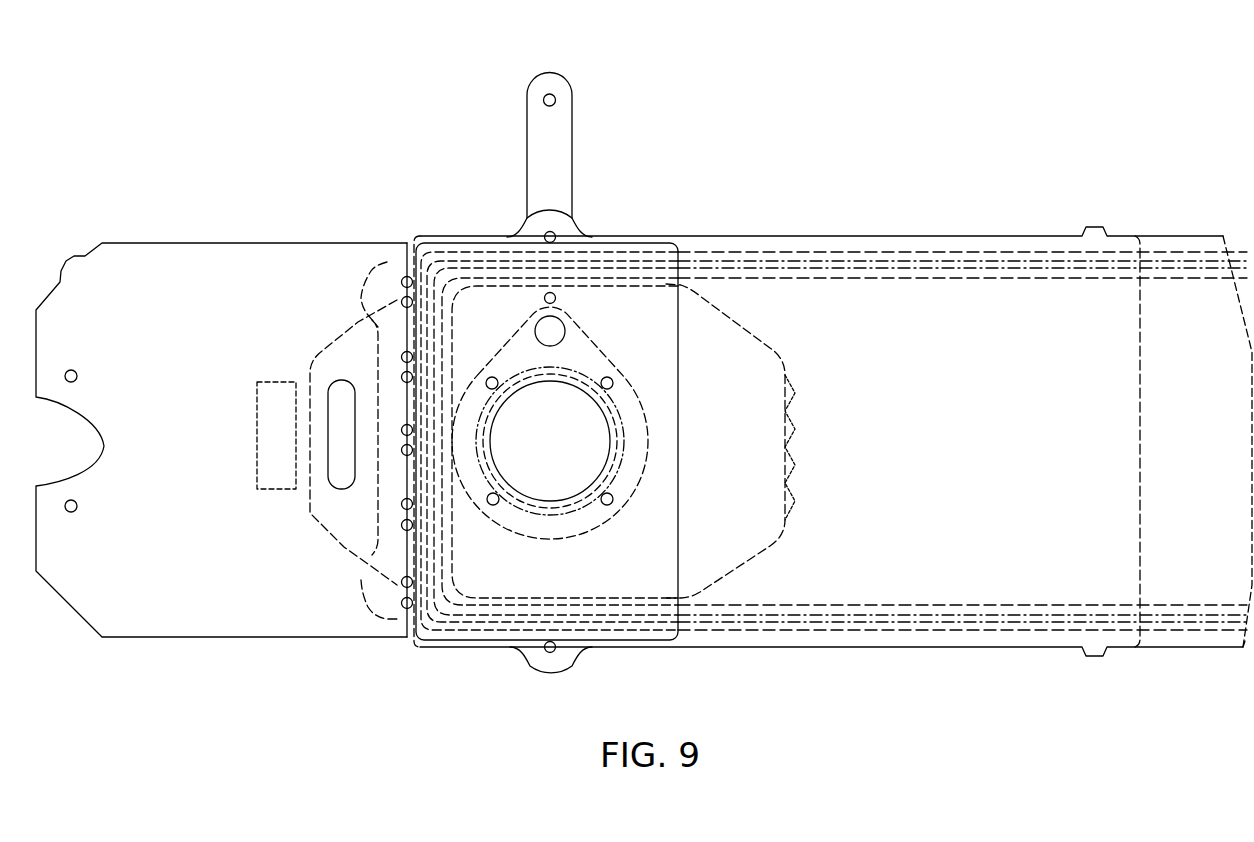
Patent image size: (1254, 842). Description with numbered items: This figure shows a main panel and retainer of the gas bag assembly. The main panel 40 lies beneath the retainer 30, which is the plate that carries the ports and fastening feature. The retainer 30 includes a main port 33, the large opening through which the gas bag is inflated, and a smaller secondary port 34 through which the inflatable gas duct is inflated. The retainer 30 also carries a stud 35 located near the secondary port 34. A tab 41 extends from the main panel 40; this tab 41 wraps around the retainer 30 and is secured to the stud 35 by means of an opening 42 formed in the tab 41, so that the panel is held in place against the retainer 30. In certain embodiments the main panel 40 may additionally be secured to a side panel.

The retainer 30 is at (542, 527).
The main port 33 is at (547, 440).
The secondary port 34 is at (548, 330).
The stud 35 is at (549, 294).
The main panel 40 is at (1077, 316).
The tab 41 is at (552, 162).
The opening 42 is at (546, 94).